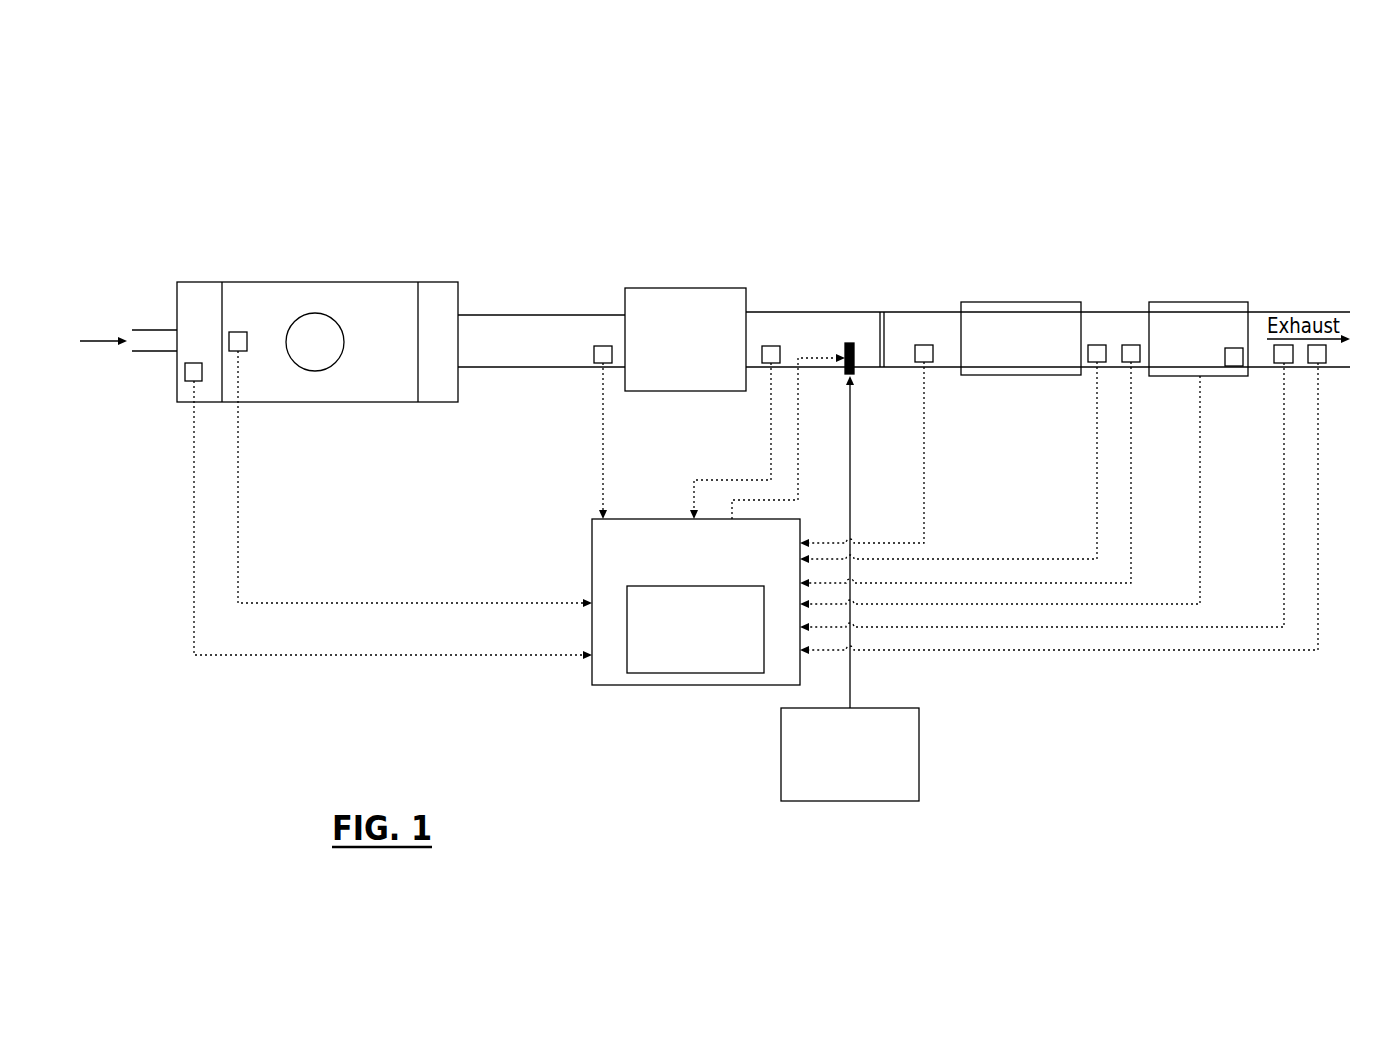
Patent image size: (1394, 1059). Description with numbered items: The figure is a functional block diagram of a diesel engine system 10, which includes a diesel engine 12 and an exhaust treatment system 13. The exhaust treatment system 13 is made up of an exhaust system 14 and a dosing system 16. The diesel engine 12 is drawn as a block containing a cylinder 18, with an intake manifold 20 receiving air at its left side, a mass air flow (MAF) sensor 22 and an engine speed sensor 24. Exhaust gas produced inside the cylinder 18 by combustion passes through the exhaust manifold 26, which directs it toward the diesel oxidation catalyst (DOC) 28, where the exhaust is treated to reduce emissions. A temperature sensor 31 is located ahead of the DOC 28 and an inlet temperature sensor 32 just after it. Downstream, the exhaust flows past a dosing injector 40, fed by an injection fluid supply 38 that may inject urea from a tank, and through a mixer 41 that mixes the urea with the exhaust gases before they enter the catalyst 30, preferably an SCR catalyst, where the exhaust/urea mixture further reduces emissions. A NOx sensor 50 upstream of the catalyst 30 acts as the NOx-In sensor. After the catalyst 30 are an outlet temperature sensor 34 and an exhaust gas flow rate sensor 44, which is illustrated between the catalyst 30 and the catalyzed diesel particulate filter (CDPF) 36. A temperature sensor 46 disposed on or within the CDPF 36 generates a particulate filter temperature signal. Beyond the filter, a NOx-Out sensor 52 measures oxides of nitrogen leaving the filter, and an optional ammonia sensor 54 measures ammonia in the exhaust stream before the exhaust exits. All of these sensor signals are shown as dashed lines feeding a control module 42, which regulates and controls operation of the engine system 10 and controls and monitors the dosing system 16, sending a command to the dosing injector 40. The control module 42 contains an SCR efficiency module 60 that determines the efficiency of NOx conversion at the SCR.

The diesel engine system 10 is at (476, 142).
The diesel engine 12 is at (268, 282).
The exhaust treatment system 13 is at (1080, 170).
The exhaust system 14 is at (1148, 452).
The dosing system 16 is at (1040, 688).
The cylinder 18 is at (318, 313).
The intake manifold 20 is at (111, 321).
The mass air flow (MAF) sensor 22 is at (185, 372).
The engine speed sensor 24 is at (238, 332).
The exhaust manifold 26 is at (437, 282).
The diesel oxidation catalyst (DOC) 28 is at (680, 288).
The catalyst 30 is at (1012, 302).
The temperature sensor 31 is at (594, 355).
The inlet temperature sensor 32 is at (770, 346).
The outlet temperature sensor 34 is at (1097, 345).
The catalyzed diesel particulate filter (CDPF) 36 is at (1193, 302).
The injection fluid supply 38 is at (897, 707).
The dosing injector 40 is at (850, 343).
The mixer 41 is at (882, 312).
The control module 42 is at (638, 519).
The exhaust gas flow rate sensor 44 is at (1131, 345).
The temperature sensor 46 is at (1235, 348).
The NOx sensor 50 is at (925, 345).
The NOx-Out sensor 52 is at (1274, 355).
The ammonia sensor 54 is at (1326, 355).
The SCR efficiency module 60 is at (652, 673).